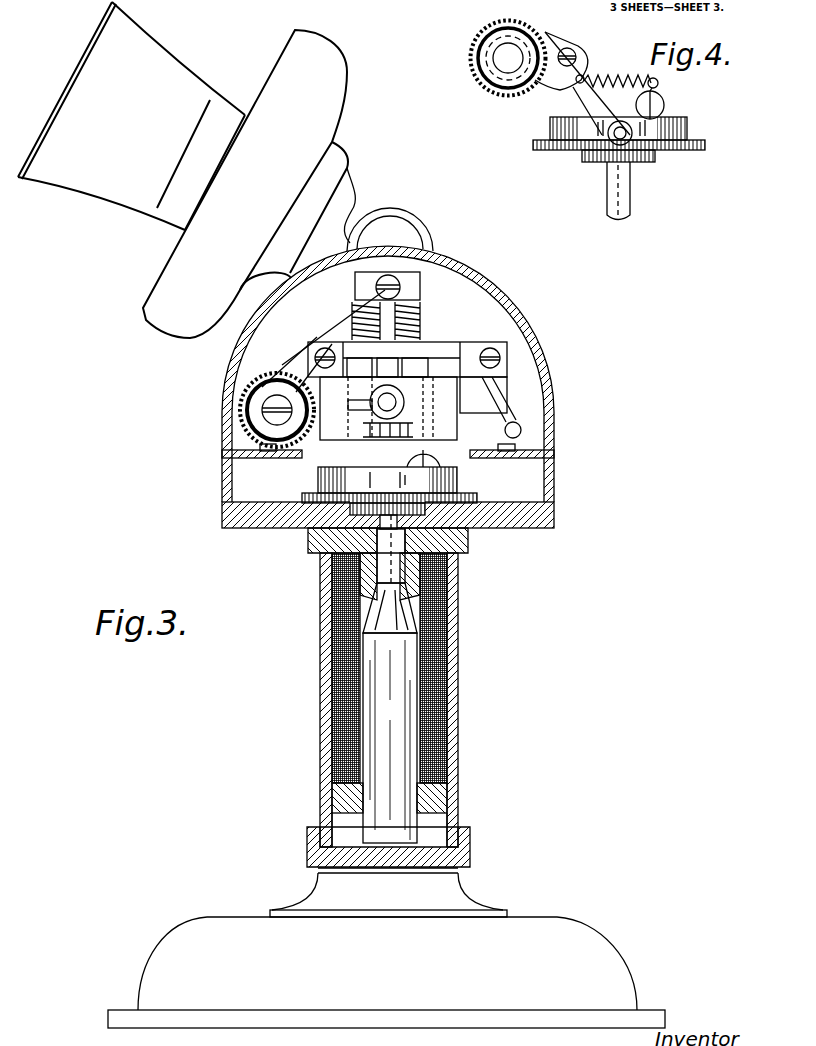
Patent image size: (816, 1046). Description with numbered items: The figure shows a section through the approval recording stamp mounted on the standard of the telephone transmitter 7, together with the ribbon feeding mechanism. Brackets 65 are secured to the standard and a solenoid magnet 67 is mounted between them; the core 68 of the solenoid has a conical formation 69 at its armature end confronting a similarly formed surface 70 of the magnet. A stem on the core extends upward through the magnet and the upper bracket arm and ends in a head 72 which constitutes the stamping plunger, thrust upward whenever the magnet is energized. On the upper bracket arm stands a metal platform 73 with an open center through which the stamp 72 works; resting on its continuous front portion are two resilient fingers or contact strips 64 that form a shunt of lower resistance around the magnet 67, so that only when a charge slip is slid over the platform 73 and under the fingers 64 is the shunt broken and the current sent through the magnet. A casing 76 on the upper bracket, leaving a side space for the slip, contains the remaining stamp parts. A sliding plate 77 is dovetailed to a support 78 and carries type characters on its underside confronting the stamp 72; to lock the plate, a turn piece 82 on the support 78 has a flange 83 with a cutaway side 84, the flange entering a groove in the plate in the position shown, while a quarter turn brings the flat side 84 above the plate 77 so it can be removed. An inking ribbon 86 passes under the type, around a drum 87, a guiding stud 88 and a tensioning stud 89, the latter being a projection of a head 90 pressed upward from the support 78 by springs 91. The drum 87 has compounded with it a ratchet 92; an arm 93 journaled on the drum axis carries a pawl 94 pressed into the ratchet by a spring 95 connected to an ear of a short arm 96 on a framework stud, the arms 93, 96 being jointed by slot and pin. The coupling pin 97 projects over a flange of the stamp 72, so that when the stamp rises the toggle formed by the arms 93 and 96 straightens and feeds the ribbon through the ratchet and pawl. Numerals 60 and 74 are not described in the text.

In FIG. 3, the transmitter 7 is at (186, 170).
In FIG. 3, the frame box 60 is at (417, 368).
In FIG. 3, the resilient fingers or contact strips 64 is at (272, 455).
In FIG. 3, the brackets 65 is at (555, 526).
In FIG. 3, the solenoid magnet 67 is at (333, 683).
In FIG. 3, the core 68 is at (387, 703).
In FIG. 3, the conical formation 69 is at (400, 608).
In FIG. 3, the surface of the magnet 70 is at (373, 578).
In FIG. 3, the head 72 is at (357, 487).
In FIG. 4, the head 72 is at (600, 133).
In FIG. 3, the platform 73 is at (230, 452).
In FIG. 3, the collar 74 is at (430, 549).
In FIG. 3, the casing 76 is at (225, 378).
In FIG. 3, the sliding plate 77 is at (447, 512).
In FIG. 4, the sliding plate 77 is at (628, 200).
In FIG. 3, the support 78 is at (447, 418).
In FIG. 3, the turn piece 82 is at (365, 408).
In FIG. 3, the flange 83 is at (400, 392).
In FIG. 3, the cutaway side 84 is at (397, 402).
In FIG. 3, the inking ribbon 86 is at (332, 316).
In FIG. 3, the drum 87 is at (258, 375).
In FIG. 4, the drum 87 is at (494, 88).
In FIG. 3, the guiding stud 88 is at (523, 427).
In FIG. 3, the tensioning stud 89 is at (395, 276).
In FIG. 3, the head 90 is at (420, 276).
In FIG. 3, the springs 91 is at (367, 362).
In FIG. 4, the ratchet 92 is at (470, 54).
In FIG. 4, the arm 93 is at (597, 140).
In FIG. 4, the pawl 94 is at (548, 33).
In FIG. 4, the spring 95 is at (620, 105).
In FIG. 4, the short arm 96 is at (648, 128).
In FIG. 4, the coupling pin 97 is at (626, 143).